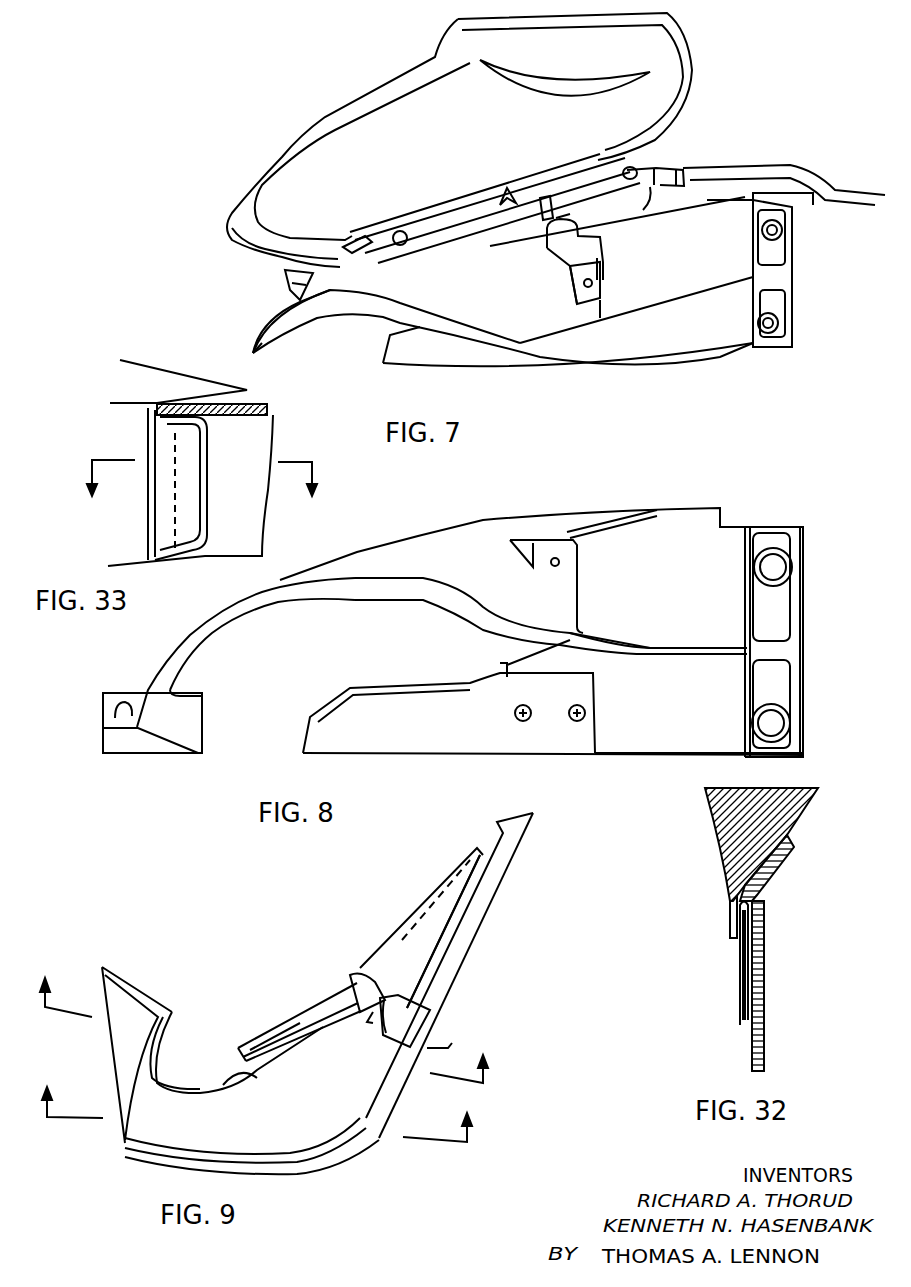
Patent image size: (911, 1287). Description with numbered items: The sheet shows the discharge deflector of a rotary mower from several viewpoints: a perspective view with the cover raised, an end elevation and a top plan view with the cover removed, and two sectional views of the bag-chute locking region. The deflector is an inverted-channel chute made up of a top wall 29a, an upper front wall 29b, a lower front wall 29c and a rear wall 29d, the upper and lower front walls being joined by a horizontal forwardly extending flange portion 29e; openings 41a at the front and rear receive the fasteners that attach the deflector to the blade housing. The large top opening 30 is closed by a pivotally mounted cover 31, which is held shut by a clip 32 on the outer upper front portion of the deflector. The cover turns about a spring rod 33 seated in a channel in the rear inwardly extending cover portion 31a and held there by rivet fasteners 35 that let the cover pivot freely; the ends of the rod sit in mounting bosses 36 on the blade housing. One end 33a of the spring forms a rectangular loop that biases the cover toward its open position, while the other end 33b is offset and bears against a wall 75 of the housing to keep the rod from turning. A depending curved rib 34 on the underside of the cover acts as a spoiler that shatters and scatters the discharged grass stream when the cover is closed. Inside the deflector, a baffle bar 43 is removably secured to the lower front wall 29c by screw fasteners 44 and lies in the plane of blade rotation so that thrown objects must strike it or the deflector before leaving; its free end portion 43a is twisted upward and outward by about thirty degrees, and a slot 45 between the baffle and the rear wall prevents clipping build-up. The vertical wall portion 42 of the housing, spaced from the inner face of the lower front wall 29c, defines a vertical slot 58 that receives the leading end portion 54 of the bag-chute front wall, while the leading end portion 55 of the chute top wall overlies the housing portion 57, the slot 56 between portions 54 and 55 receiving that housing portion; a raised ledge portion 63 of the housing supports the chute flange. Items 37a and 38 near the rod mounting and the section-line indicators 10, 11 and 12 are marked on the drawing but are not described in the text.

In FIG. 7, the top wall 29a is at (380, 296).
In FIG. 8, the top wall 29a is at (418, 550).
In FIG. 9, the top wall 29a is at (330, 1148).
In FIG. 7, the upper front wall 29b is at (687, 268).
In FIG. 8, the upper front wall 29b is at (678, 590).
In FIG. 9, the upper front wall 29b is at (457, 952).
In FIG. 7, the lower front wall 29c is at (297, 272).
In FIG. 8, the lower front wall 29c is at (667, 745).
In FIG. 9, the lower front wall 29c is at (400, 945).
In FIG. 32, the lower front wall 29c is at (764, 922).
In FIG. 7, the rear wall 29d is at (250, 352).
In FIG. 8, the rear wall 29d is at (180, 630).
In FIG. 9, the rear wall 29d is at (125, 1050).
In FIG. 8, the flange portion 29e is at (723, 622).
In FIG. 9, the top opening 30 is at (255, 1080).
In FIG. 7, the cover 31 is at (337, 145).
In FIG. 7, the rear inwardly extending cover portion 31a is at (680, 168).
In FIG. 7, the clip 32 is at (550, 262).
In FIG. 33, the clip 32 is at (201, 491).
In FIG. 9, the clip 32 is at (413, 1023).
In FIG. 7, the spring rod 33 is at (455, 218).
In FIG. 7, the spring end loop 33a is at (352, 246).
In FIG. 7, the offset spring end 33b is at (678, 172).
In FIG. 7, the curved rib 34 is at (482, 78).
In FIG. 7, the rivet fasteners 35 is at (403, 230).
In FIG. 7, the mounting bosses 36 is at (625, 167).
In FIG. 7, the stop 37a is at (546, 197).
In FIG. 7, the latch 38 is at (564, 213).
In FIG. 7, the openings 41a is at (765, 333).
In FIG. 8, the openings 41a is at (765, 555).
In FIG. 33, the vertical wall portion 42 is at (245, 535).
In FIG. 32, the vertical wall portion 42 is at (730, 918).
In FIG. 8, the baffle bar 43 is at (430, 755).
In FIG. 9, the baffle bar 43 is at (300, 1020).
In FIG. 9, the free end portion of baffle 43a is at (263, 1045).
In FIG. 8, the screw fasteners 44 is at (578, 722).
In FIG. 9, the screw fasteners 44 is at (352, 980).
In FIG. 9, the slot 45 is at (195, 1050).
In FIG. 33, the leading end portion of chute front wall 54 is at (210, 490).
In FIG. 32, the leading end portion of chute front wall 54 is at (740, 975).
In FIG. 33, the leading end portion of chute top wall 55 is at (148, 362).
In FIG. 33, the slot 56 is at (172, 405).
In FIG. 7, the housing portion 57 is at (720, 200).
In FIG. 33, the housing portion 57 is at (227, 416).
In FIG. 32, the vertical slot 58 is at (762, 902).
In FIG. 7, the raised ledge portion 63 is at (650, 190).
In FIG. 7, the housing wall 75 is at (733, 167).
In FIG. 9, the section line 10 is at (269, 1019).
In FIG. 9, the section line 11 is at (261, 1103).
In FIG. 9, the section line 12 is at (419, 1017).